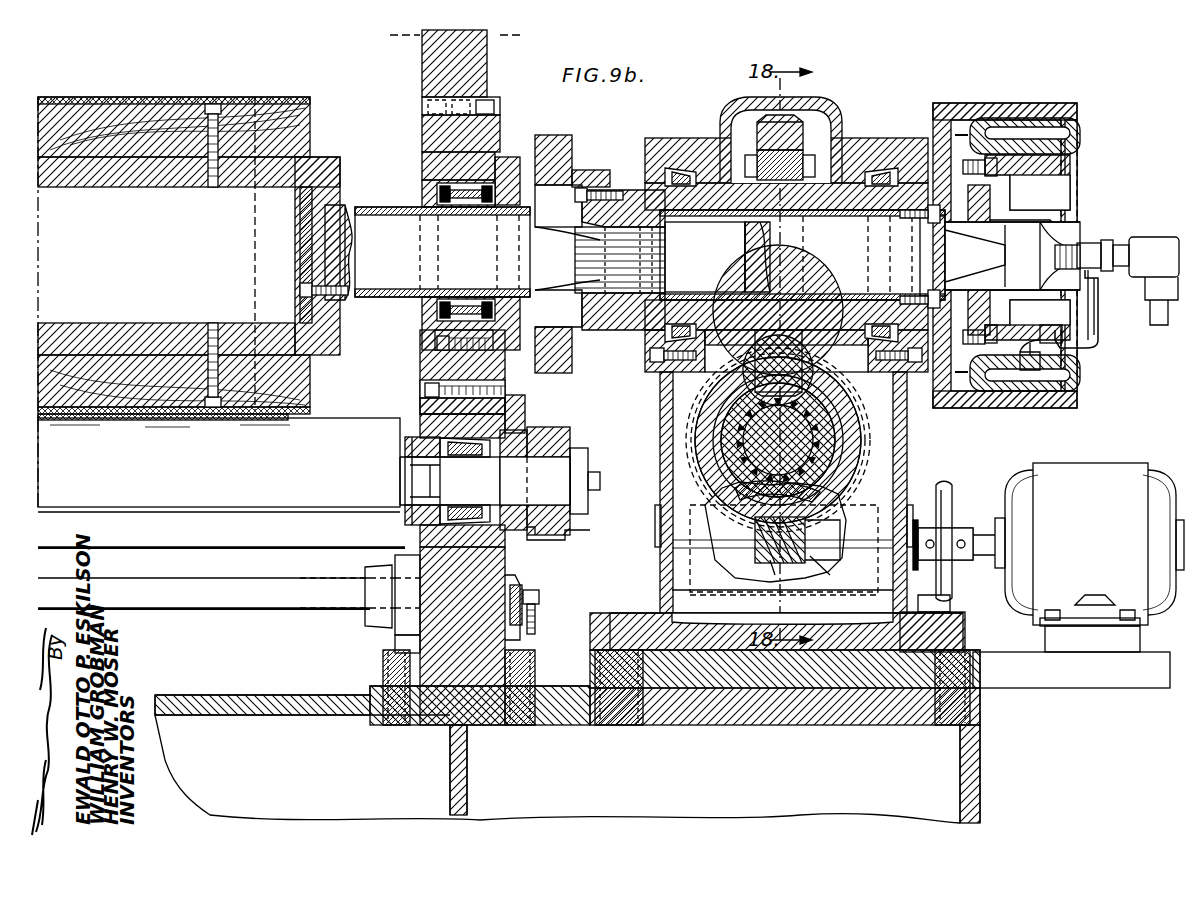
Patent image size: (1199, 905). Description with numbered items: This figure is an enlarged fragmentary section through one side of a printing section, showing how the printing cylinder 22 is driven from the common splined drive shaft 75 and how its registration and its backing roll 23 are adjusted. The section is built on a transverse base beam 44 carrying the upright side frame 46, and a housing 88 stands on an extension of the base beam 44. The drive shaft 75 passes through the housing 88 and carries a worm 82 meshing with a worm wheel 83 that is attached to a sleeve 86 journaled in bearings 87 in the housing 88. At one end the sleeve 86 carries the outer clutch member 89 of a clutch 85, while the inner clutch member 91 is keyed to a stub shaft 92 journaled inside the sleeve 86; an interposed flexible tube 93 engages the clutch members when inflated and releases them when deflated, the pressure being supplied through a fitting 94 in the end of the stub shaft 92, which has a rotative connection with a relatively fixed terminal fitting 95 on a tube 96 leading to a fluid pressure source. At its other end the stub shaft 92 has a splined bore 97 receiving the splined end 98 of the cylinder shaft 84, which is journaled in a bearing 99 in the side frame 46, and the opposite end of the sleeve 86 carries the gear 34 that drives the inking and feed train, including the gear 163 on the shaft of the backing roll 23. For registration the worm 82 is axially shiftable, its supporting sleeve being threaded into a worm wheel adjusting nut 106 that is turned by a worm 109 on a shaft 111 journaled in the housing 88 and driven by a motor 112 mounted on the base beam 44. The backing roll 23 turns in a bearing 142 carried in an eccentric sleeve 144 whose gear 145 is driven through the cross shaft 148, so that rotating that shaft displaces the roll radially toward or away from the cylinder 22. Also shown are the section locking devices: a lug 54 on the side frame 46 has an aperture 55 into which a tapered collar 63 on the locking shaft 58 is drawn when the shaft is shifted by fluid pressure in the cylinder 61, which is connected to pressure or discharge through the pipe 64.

The printing cylinder 22 is at (285, 100).
The backing roll 23 is at (219, 464).
The shaft 58 is at (175, 603).
The aperture 55 is at (405, 627).
The collar 63 is at (372, 575).
The lug 54 is at (400, 642).
The fluid pressure cylinder 61 is at (522, 590).
The pipe 64 is at (540, 598).
The cylinder shaft 84 is at (378, 210).
The bearing 99 is at (473, 215).
The side frame 46 is at (484, 76).
The gear 34 is at (560, 137).
The splined end 98 is at (580, 288).
The splined bore 97 is at (637, 290).
The stub shaft 92 is at (802, 255).
The sleeve 86 is at (718, 183).
The bearings 87 is at (675, 170).
The worm wheel 83 is at (800, 128).
The housing 88 is at (653, 402).
The worm 82 is at (830, 455).
The splined drive shaft 75 is at (800, 438).
The worm wheel adjusting nut 106 is at (725, 512).
The worm 109 is at (810, 540).
The shaft 111 is at (822, 560).
The gear 145 is at (522, 400).
The sleeve 144 is at (520, 425).
The bearing 142 is at (445, 442).
The shaft 148 is at (550, 475).
The gear 163 is at (555, 540).
The clutch 85 is at (1000, 96).
The outer clutch member 89 is at (1052, 103).
The flexible tube 93 is at (1080, 128).
The inner clutch member 91 is at (1060, 173).
The fitting 94 is at (1088, 250).
The terminal fitting 95 is at (1156, 240).
The tube 96 is at (1165, 326).
The motor 112 is at (1088, 472).
The base beam 44 is at (978, 742).